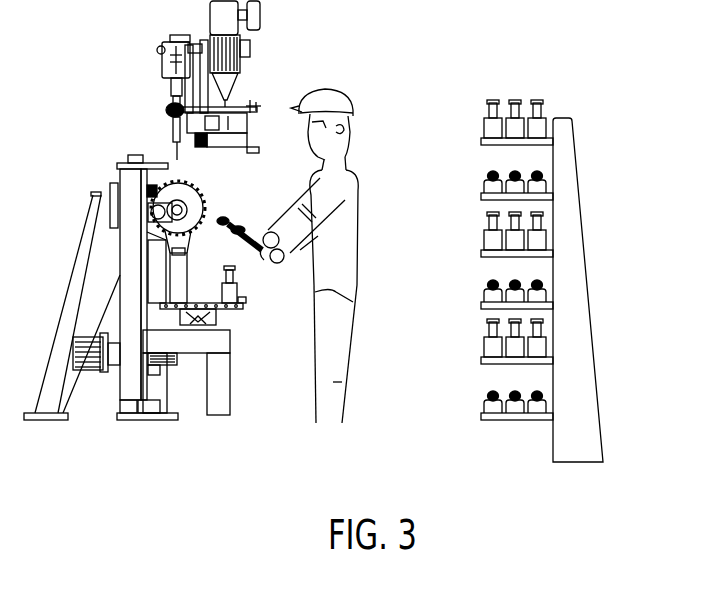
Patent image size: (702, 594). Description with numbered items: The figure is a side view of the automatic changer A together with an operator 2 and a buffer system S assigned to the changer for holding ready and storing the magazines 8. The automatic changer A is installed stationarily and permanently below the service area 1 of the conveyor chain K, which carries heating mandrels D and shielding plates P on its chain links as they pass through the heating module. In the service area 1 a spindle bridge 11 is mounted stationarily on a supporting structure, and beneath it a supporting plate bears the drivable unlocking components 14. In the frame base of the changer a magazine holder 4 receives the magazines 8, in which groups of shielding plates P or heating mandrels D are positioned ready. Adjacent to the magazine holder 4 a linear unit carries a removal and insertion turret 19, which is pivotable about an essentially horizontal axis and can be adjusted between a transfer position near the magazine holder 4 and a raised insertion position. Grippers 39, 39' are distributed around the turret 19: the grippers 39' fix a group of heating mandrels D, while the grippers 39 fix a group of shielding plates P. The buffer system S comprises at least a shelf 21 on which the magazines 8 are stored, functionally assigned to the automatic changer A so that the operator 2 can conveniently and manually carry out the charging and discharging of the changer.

The service area 1 is at (90, 152).
The operator 2 is at (348, 250).
The magazine holder 4 is at (227, 313).
The magazine 8 is at (234, 288).
The spindle bridge 11 is at (240, 98).
The unlocking components 14 is at (247, 144).
The removal and insertion turret 19 is at (143, 195).
The shelf 21 is at (568, 224).
The gripper 39 is at (192, 264).
The gripper 39' is at (201, 208).
The conveyor chain K is at (148, 100).
The automatic changer A is at (102, 128).
The heating mandrel D is at (173, 138).
The shielding plate P is at (180, 157).
The buffer system S is at (590, 187).